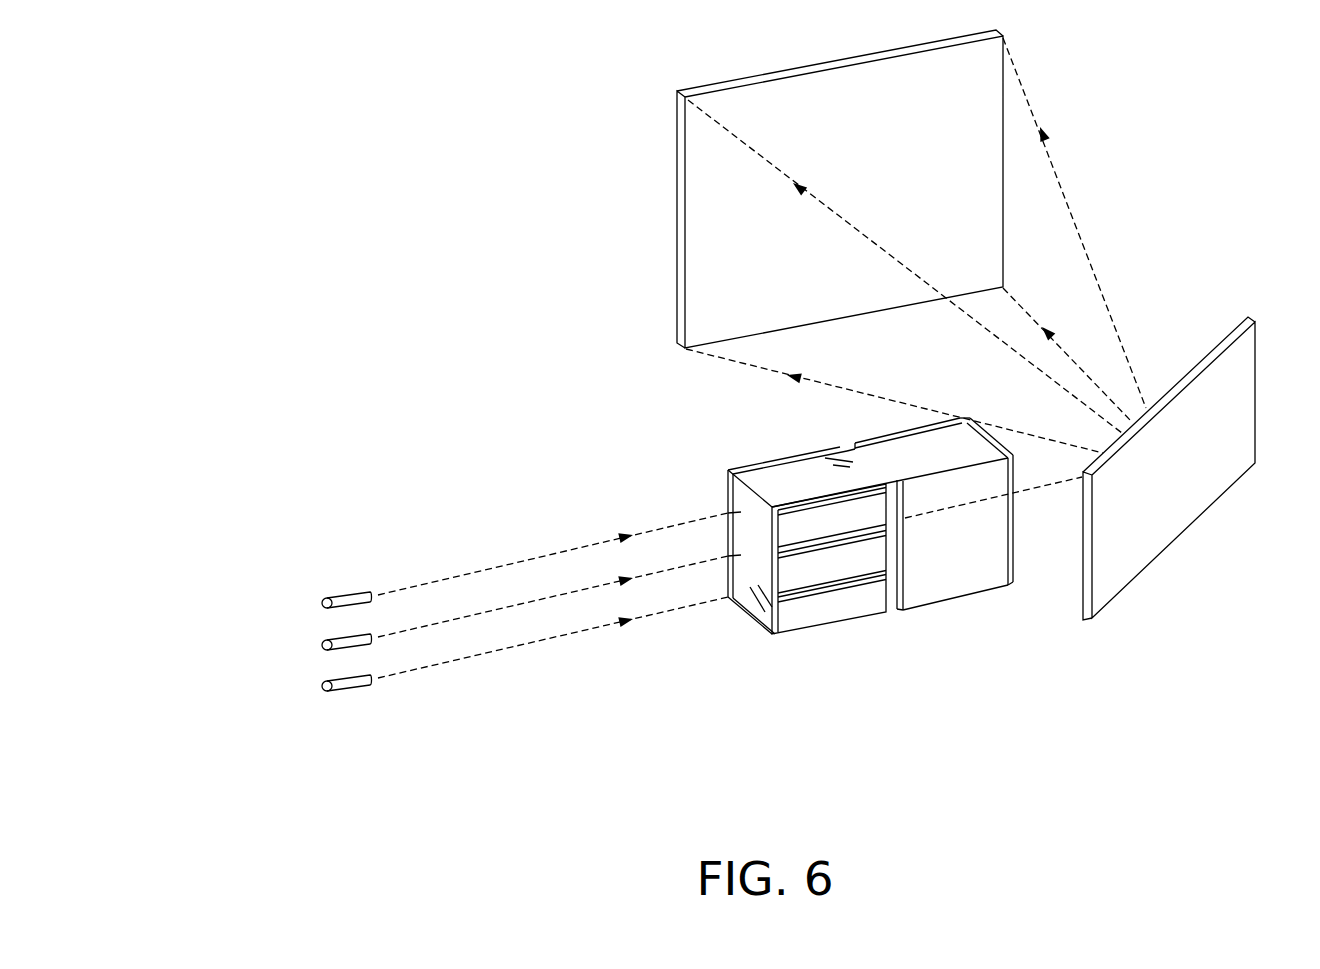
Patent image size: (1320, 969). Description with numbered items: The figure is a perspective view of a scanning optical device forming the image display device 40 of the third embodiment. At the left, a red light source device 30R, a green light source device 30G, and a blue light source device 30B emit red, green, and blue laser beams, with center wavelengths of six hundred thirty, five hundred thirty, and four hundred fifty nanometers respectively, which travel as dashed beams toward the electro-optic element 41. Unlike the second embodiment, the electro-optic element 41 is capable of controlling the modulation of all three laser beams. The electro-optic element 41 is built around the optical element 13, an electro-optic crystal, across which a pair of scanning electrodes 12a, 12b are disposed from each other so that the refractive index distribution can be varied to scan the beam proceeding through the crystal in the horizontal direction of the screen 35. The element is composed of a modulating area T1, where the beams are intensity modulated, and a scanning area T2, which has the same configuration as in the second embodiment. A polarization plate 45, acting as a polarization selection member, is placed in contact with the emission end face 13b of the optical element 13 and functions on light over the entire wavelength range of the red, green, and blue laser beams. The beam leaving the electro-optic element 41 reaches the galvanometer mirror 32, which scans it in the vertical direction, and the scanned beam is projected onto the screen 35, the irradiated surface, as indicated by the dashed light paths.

The image display device 40 is at (428, 152).
The screen 35 is at (677, 184).
The galvanometer mirror 32 is at (1125, 593).
The electro-optic element 41 is at (884, 628).
The optical element 13 is at (742, 602).
The scanning electrode 12a is at (970, 598).
The scanning electrode 12b is at (872, 438).
The emission end face 13b is at (1007, 450).
The polarization plate 45 is at (1015, 558).
The modulating area T1 is at (740, 530).
The scanning area T2 is at (947, 438).
The blue light source device 30B is at (350, 593).
The green light source device 30G is at (320, 648).
The red light source device 30R is at (357, 688).